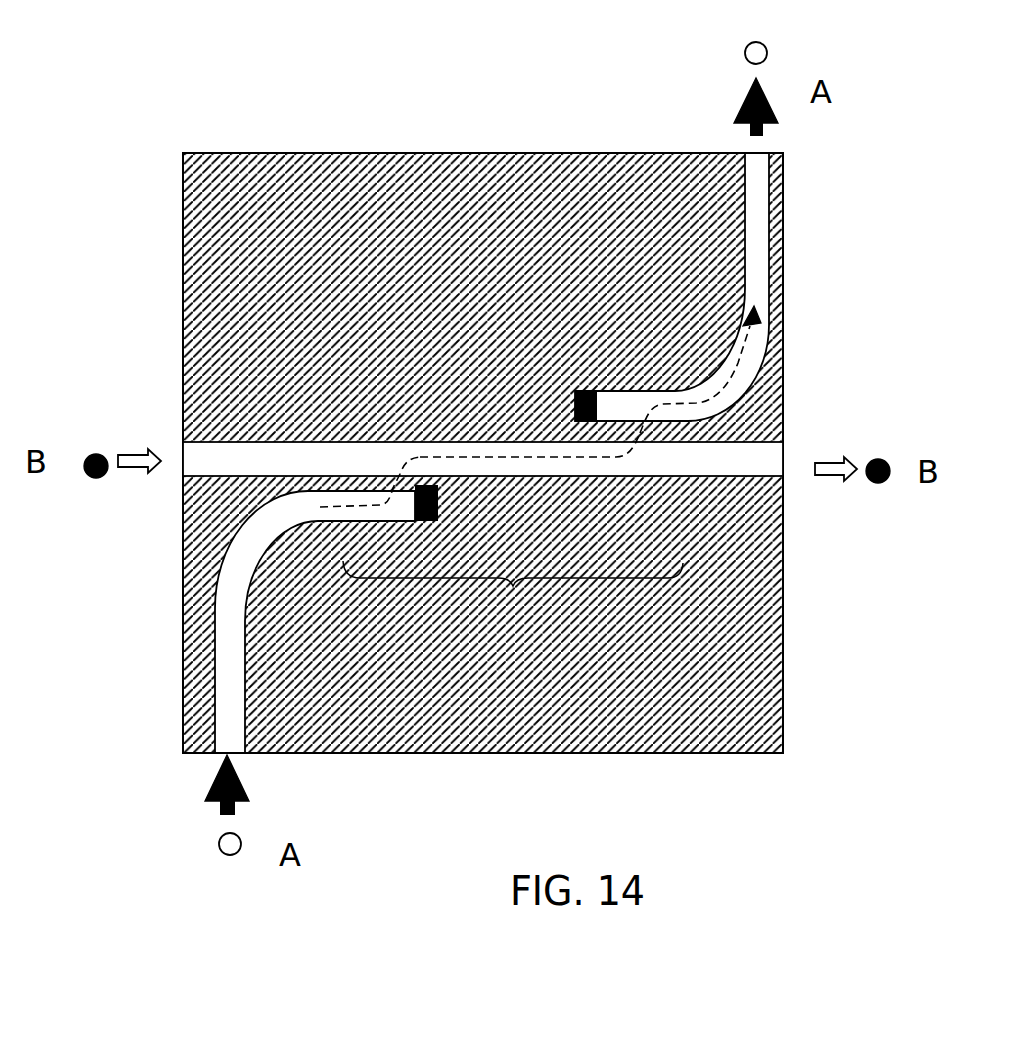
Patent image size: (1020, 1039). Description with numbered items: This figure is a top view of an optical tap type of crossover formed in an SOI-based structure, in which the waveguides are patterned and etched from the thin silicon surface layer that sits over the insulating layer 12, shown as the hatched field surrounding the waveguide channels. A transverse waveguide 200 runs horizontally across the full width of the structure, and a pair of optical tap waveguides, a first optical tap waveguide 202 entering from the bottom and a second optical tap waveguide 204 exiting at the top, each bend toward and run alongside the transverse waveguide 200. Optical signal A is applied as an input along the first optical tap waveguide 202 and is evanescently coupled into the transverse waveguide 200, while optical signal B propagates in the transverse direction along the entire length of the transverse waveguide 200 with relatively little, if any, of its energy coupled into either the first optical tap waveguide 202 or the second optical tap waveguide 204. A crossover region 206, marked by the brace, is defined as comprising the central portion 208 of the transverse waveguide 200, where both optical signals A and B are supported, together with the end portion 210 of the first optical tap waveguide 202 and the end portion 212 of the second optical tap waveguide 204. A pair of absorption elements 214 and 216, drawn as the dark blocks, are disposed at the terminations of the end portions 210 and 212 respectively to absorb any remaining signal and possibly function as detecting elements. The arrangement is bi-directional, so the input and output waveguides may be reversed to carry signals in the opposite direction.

The insulating layer 12 is at (712, 597).
The transverse waveguide 200 is at (210, 452).
The first optical tap waveguide 202 is at (213, 662).
The second optical tap waveguide 204 is at (748, 197).
The crossover region 206 is at (513, 610).
The central portion of transverse waveguide 208 is at (470, 435).
The end portion of first optical tap 210 is at (342, 507).
The end portion of second optical tap 212 is at (627, 393).
The absorption element 214 is at (430, 493).
The absorption element 216 is at (567, 392).